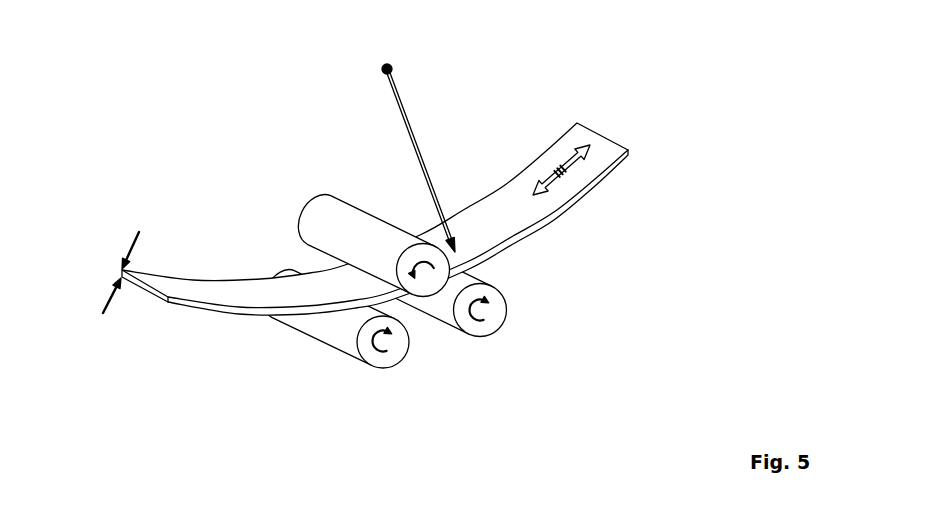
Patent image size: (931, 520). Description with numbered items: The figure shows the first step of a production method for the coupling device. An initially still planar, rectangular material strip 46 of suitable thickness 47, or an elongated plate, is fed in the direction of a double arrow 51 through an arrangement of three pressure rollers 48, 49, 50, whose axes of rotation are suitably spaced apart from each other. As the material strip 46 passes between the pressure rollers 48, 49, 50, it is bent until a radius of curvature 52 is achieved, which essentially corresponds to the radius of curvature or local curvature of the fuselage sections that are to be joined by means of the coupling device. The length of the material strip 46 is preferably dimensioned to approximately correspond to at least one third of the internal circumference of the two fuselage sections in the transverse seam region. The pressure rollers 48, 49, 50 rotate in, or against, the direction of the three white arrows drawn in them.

The material strip 46 is at (600, 160).
The thickness 47 is at (139, 232).
The pressure roller 48 is at (314, 212).
The pressure roller 49 is at (384, 367).
The pressure roller 50 is at (487, 332).
The double arrow 51 is at (553, 182).
The radius of curvature 52 is at (420, 153).